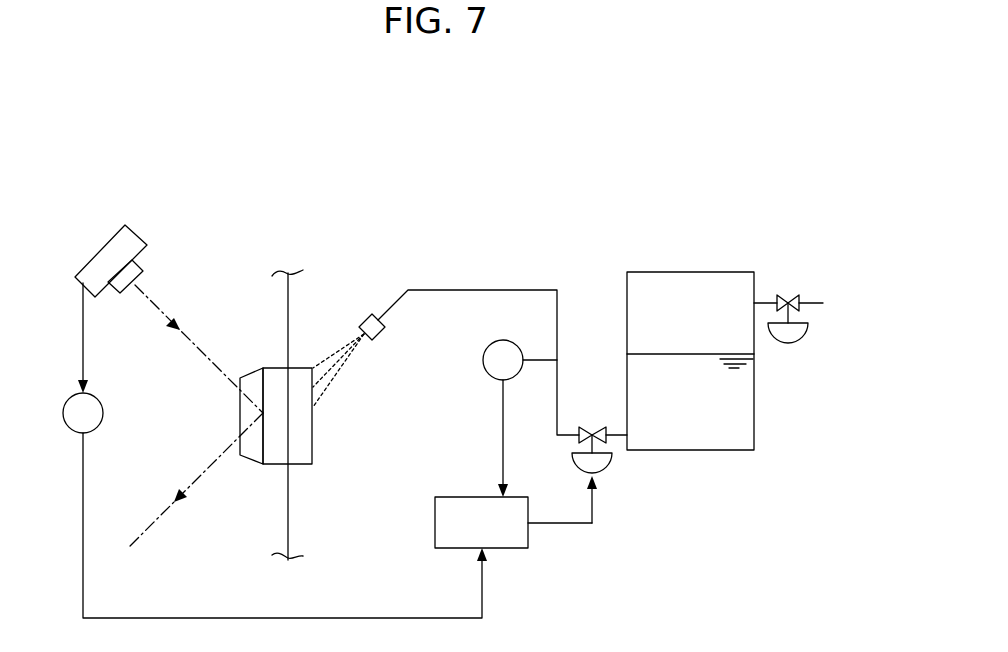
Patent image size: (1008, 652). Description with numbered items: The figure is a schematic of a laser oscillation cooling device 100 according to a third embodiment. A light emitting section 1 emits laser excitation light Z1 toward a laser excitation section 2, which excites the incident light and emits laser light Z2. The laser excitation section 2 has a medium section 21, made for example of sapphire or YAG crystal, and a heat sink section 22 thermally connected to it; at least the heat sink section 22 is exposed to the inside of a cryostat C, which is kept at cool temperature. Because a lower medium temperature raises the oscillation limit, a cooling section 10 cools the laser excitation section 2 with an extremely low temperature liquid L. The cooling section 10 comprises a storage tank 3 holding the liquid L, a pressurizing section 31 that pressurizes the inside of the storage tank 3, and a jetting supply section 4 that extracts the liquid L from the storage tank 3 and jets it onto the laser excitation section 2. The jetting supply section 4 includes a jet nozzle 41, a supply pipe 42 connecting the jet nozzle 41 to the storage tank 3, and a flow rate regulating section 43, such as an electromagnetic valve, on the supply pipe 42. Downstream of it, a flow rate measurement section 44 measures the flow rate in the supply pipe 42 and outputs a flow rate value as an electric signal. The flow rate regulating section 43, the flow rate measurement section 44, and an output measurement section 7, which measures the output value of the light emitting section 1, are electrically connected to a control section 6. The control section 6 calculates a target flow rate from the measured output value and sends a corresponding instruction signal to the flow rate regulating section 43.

The cooling section 10 is at (675, 192).
The laser oscillation cooling device 100 is at (115, 212).
The light emitting section 1 is at (132, 238).
The laser excitation section 2 is at (220, 282).
The medium section 21 is at (275, 368).
The heat sink section 22 is at (302, 368).
The cryostat C is at (287, 533).
The laser excitation light Z1 is at (165, 320).
The laser light Z2 is at (200, 480).
The jetting supply section 4 is at (430, 260).
The jet nozzle 41 is at (365, 318).
The supply pipe 42 is at (517, 290).
The flow rate regulating section 43 is at (600, 463).
The flow rate measurement section 44 is at (483, 360).
The extremely low temperature liquid L is at (340, 373).
The storage tank 3 is at (754, 420).
The pressurizing section 31 is at (798, 332).
The control section 6 is at (465, 518).
The output measurement section 7 is at (103, 415).